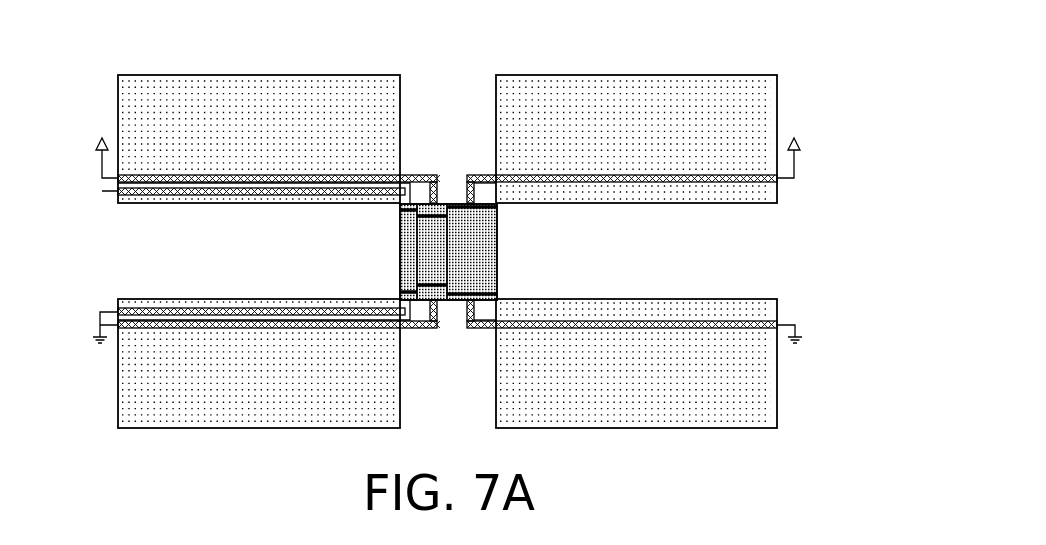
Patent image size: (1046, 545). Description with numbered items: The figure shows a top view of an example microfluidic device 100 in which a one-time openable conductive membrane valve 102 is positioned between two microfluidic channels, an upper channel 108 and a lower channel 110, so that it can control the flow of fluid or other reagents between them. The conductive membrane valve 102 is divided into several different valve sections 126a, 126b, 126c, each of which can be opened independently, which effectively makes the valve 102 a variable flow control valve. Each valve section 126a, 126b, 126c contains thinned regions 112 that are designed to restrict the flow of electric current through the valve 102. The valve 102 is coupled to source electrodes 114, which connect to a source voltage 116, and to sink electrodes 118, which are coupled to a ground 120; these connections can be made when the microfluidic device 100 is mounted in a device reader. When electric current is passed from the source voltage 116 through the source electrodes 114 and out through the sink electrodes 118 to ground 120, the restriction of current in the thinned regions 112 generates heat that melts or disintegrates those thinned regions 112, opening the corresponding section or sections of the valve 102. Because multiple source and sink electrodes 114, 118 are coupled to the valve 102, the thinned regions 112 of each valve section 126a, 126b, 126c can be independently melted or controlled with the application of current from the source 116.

The microfluidic device 100 is at (766, 50).
The conductive membrane valve 102 is at (473, 252).
The microfluidic channel 108 is at (465, 113).
The microfluidic channel 110 is at (211, 270).
The thinned regions 112 is at (400, 212).
The source electrode 114 is at (487, 175).
The source voltage 116 is at (81, 146).
The sink electrode 118 is at (487, 328).
The ground 120 is at (87, 374).
The valve section 126a is at (401, 244).
The valve section 126b is at (442, 257).
The valve section 126c is at (490, 250).